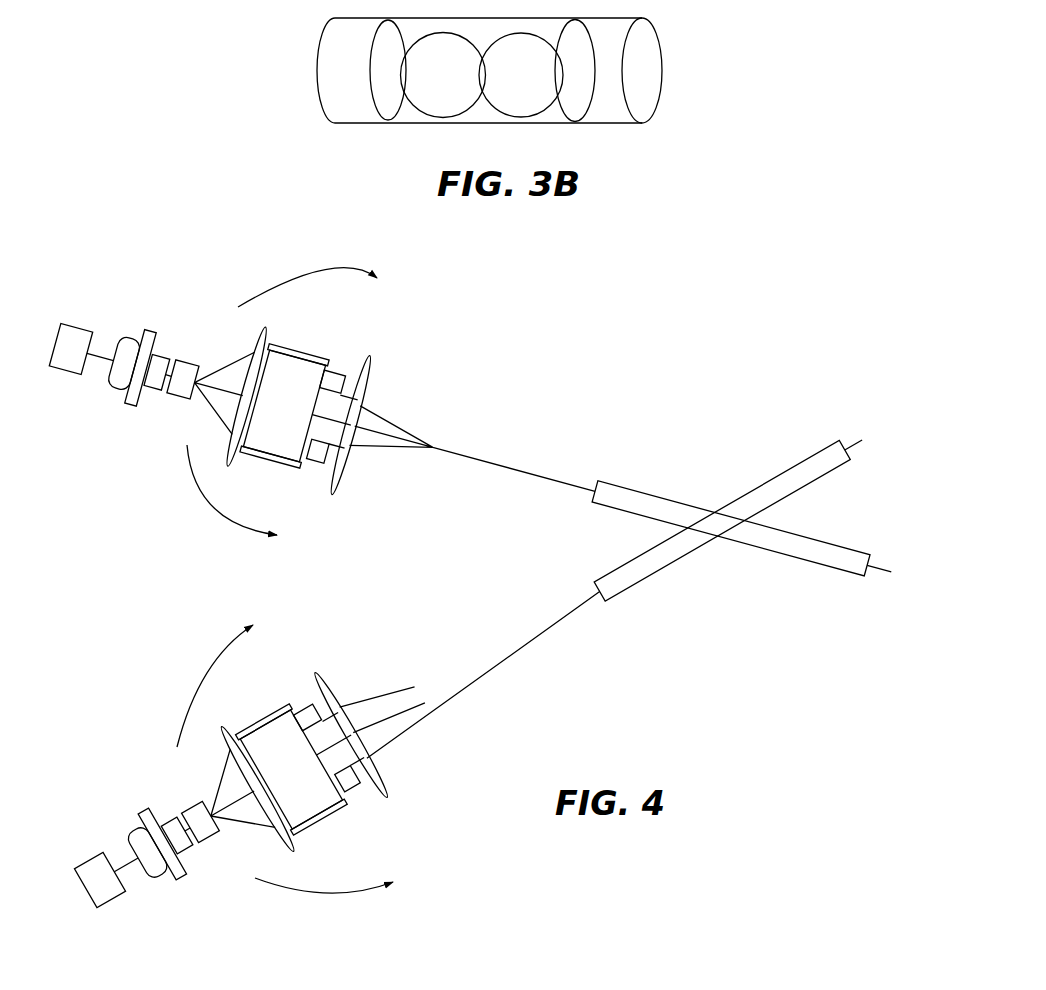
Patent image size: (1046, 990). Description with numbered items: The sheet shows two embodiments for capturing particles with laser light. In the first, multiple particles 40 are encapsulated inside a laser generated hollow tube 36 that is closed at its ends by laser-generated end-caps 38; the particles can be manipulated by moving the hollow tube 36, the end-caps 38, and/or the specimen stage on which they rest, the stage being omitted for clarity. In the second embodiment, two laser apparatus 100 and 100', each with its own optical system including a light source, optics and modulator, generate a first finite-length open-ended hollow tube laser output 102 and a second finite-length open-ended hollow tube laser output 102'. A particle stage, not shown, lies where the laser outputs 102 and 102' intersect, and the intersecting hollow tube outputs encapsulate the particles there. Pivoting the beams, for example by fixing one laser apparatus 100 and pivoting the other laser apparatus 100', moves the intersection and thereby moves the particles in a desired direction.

In FIG. 3B, the laser generated hollow tube 36 is at (608, 124).
In FIG. 3B, the laser-generated end-caps 38 is at (373, 103).
In FIG. 3B, the particles 40 is at (458, 82).
In FIG. 4, the laser apparatus 100 is at (325, 414).
In FIG. 4, the laser apparatus 100' is at (343, 739).
In FIG. 4, the first finite-length open-ended hollow tube laser output 102 is at (743, 564).
In FIG. 4, the second finite-length open-ended hollow tube laser output 102' is at (730, 505).